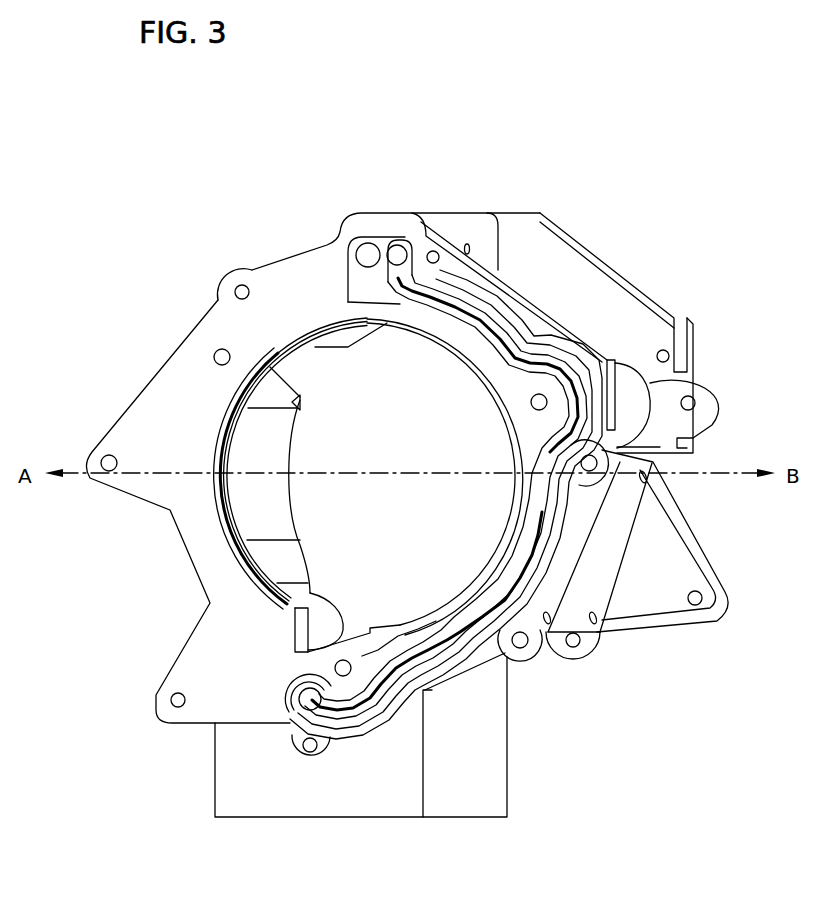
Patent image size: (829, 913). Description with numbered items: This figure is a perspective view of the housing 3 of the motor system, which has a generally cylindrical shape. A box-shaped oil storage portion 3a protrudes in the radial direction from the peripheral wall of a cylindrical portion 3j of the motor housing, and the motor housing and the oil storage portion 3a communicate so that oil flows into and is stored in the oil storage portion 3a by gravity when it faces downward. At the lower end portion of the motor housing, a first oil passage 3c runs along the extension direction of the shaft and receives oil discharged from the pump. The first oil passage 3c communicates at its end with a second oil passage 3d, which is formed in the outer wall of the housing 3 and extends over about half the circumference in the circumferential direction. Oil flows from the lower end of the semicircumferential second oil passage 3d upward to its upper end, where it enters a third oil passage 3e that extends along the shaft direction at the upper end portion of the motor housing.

The housing 3 is at (586, 216).
The oil storage portion 3a is at (507, 756).
The first oil passage 3c is at (303, 697).
The second oil passage 3d is at (550, 480).
The third oil passage 3e is at (394, 252).
The cylindrical portion 3j is at (630, 393).